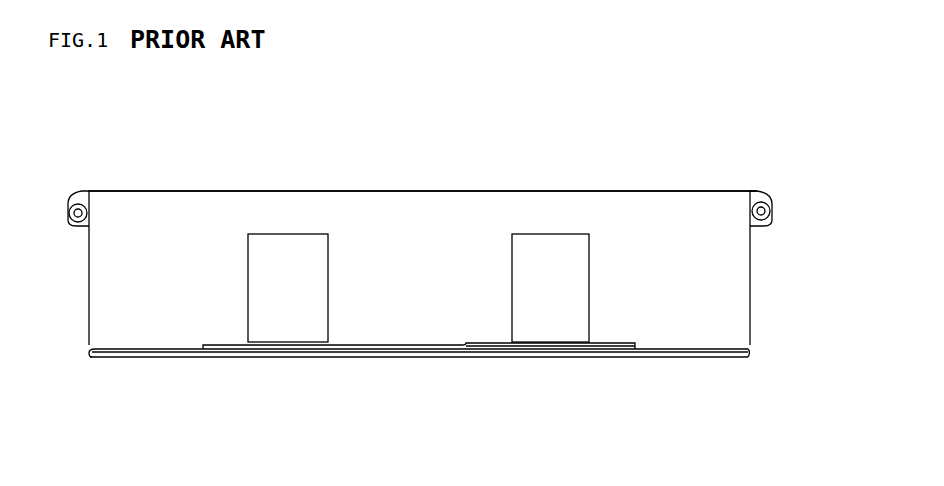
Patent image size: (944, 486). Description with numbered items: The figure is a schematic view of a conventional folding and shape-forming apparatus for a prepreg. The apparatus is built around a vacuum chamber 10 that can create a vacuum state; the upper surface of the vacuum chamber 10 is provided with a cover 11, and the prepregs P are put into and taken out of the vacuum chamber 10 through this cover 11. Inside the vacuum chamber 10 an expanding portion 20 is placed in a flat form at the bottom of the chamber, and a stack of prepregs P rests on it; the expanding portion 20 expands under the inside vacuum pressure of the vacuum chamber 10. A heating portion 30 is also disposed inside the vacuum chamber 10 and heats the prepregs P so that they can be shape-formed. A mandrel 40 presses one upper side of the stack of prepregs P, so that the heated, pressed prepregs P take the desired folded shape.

The vacuum chamber 10 is at (750, 273).
The cover 11 is at (578, 189).
The expanding portion 20 is at (157, 357).
The heating portion 30 is at (263, 357).
The mandrel 40 is at (518, 253).
The prepregs P is at (467, 345).